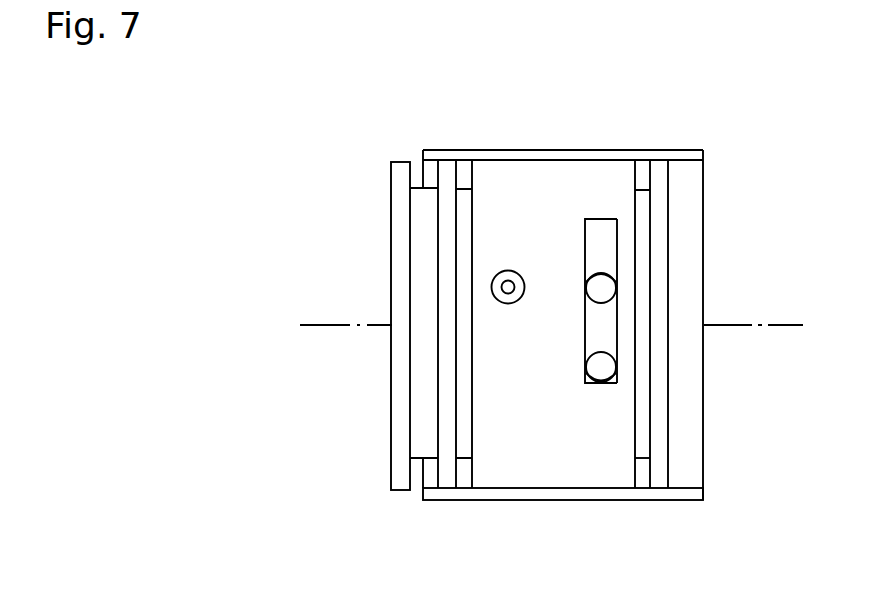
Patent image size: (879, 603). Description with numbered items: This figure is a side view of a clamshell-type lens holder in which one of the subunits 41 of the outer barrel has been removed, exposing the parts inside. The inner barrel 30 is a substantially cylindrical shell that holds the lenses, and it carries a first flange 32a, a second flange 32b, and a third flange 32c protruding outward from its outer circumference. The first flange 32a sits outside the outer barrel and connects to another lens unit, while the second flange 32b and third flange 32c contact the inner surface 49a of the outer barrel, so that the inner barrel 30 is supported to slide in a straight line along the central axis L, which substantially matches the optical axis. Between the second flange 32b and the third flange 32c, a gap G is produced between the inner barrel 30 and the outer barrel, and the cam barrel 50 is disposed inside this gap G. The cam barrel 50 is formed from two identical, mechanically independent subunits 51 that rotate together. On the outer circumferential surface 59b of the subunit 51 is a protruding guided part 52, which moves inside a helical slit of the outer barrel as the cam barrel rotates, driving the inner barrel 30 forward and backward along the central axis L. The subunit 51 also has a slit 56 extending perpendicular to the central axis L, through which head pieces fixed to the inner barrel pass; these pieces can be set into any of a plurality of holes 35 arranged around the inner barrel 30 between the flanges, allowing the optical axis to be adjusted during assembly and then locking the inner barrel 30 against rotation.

The inner barrel 30 is at (435, 207).
The first flange 32a is at (399, 172).
The second flange 32b is at (450, 170).
The third flange 32c is at (657, 167).
The holes 35 is at (592, 366).
The subunit of the outer barrel 41 is at (613, 150).
The inner surface of the outer barrel 49a is at (423, 167).
The cam barrel 50 is at (550, 173).
The subunit of the cam barrel 51 is at (502, 173).
The protruding guided part 52 is at (507, 304).
The slit 56 is at (590, 243).
The outer circumferential surface of the cam barrel subunit 59b is at (614, 207).
The central axis L is at (775, 322).
The gap G is at (645, 480).